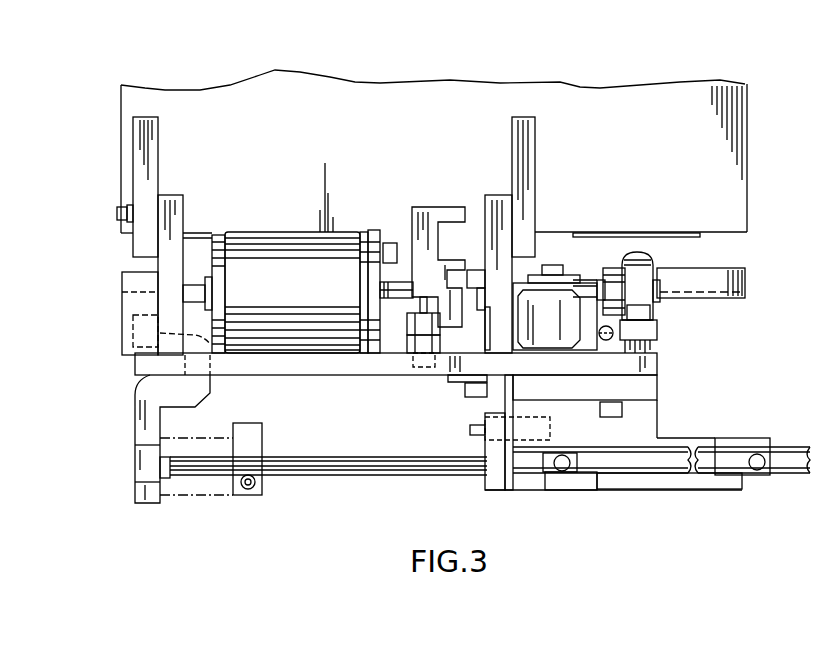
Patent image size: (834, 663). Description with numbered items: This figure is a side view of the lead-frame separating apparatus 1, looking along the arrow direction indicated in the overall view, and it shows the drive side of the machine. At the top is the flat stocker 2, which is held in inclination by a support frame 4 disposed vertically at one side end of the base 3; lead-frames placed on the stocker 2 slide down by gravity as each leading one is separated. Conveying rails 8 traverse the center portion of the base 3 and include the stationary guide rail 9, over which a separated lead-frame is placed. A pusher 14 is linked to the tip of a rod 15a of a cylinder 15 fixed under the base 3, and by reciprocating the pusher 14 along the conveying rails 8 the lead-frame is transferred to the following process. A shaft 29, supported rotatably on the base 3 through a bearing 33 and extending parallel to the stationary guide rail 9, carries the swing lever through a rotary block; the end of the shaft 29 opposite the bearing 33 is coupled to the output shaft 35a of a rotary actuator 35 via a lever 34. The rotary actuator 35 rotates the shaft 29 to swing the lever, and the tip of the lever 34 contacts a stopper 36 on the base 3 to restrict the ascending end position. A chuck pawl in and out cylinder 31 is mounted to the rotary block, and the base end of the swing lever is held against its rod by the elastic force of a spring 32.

The lead-frame separating apparatus 1 is at (686, 53).
The stocker 2 is at (750, 110).
The base 3 is at (650, 363).
The support frame 4 is at (183, 212).
The conveying rails 8 is at (745, 264).
The stationary guide rail 9 is at (717, 298).
The pusher 14 is at (122, 345).
The cylinder 15 is at (667, 477).
The rod 15a is at (360, 467).
The shaft 29 is at (605, 255).
The chuck pawl in and out cylinder 31 is at (557, 300).
The spring 32 is at (607, 340).
The bearing 33 is at (650, 262).
The lever 34 is at (425, 213).
The rotary actuator 35 is at (280, 250).
The output shaft 35a is at (403, 280).
The stopper 36 is at (422, 318).